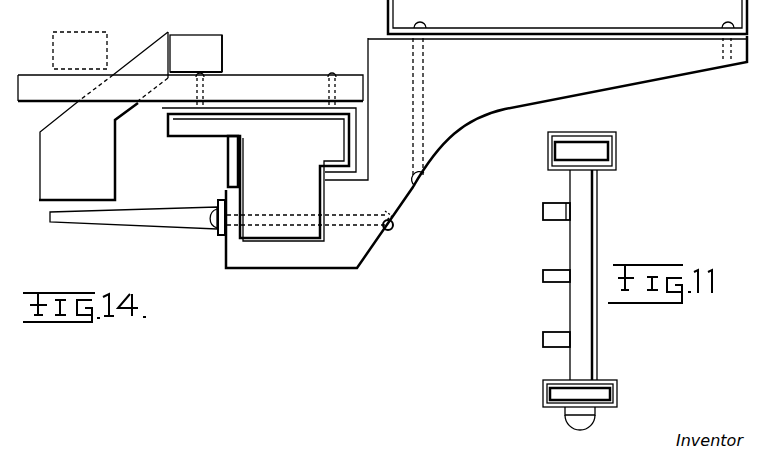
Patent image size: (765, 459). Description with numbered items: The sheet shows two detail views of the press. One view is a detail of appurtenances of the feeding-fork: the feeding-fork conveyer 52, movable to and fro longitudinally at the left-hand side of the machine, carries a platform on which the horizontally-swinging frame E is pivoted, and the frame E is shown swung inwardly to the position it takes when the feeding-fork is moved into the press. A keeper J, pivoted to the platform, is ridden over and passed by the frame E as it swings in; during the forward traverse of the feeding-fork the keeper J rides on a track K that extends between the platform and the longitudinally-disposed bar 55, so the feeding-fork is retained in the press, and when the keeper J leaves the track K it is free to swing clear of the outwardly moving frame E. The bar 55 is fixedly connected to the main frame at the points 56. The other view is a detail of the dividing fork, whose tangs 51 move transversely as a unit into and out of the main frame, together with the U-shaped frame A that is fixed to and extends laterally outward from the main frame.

In FIG. 14, the horizontally-swinging frame E is at (222, 55).
In FIG. 14, the keeper J is at (103, 116).
In FIG. 14, the track K is at (166, 229).
In FIG. 14, the feeding-fork conveyer 52 is at (199, 147).
In FIG. 14, the longitudinally-disposed bar 55 is at (258, 177).
In FIG. 14, the connection points 56 is at (486, 152).
In FIG. 14, the U-shaped frame A is at (544, 19).
In FIG. 11, the U-shaped frame A is at (602, 153).
In FIG. 11, the tangs of dividing fork 51 is at (541, 333).